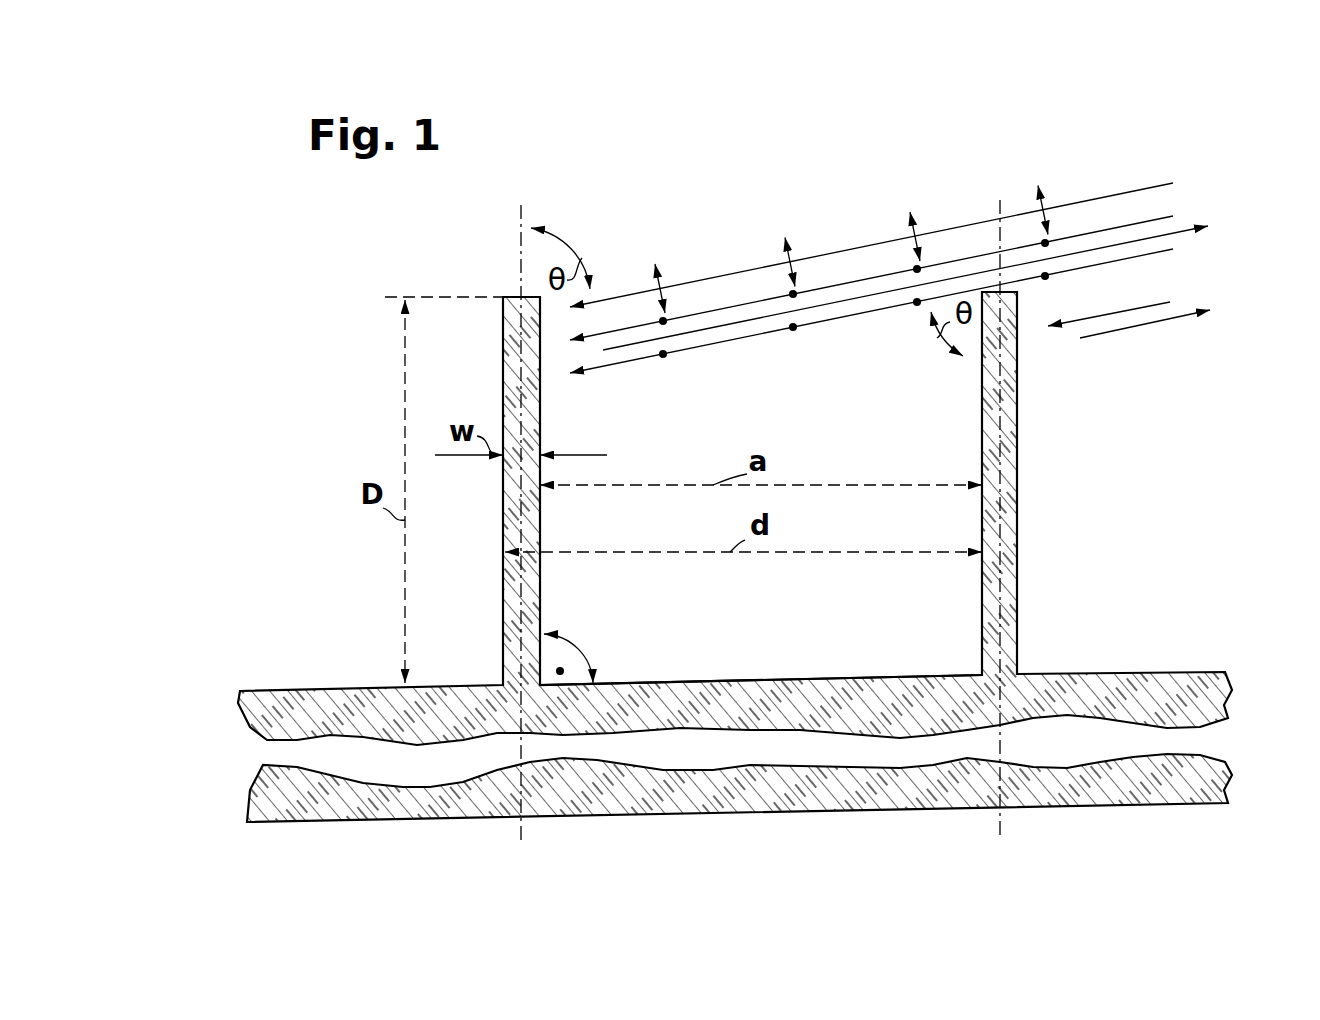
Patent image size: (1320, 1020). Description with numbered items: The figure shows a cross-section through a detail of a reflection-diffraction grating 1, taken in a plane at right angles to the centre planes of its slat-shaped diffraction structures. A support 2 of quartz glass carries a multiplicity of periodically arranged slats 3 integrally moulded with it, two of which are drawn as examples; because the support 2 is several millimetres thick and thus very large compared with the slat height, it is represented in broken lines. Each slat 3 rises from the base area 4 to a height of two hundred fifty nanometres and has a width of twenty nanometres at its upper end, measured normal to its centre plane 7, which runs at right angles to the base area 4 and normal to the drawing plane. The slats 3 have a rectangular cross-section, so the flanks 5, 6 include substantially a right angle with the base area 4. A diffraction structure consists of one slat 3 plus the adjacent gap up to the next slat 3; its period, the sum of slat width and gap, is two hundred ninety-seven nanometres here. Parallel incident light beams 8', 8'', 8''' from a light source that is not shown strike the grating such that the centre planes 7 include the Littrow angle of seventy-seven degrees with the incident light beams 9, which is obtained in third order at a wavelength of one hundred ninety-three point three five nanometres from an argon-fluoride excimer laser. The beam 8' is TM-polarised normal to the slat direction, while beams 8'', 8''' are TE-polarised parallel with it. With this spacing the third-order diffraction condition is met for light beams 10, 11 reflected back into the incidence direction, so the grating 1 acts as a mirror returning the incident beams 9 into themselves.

The reflection-diffraction grating 1 is at (326, 334).
The support 2 is at (1196, 694).
The slat 3 is at (1017, 437).
The base area 4 is at (708, 684).
The flank 5 is at (982, 583).
The flank 6 is at (1017, 582).
The centre plane 7 is at (519, 222).
The light beam 8' is at (871, 218).
The light beam 8'' is at (871, 232).
The light beam 8''' is at (880, 248).
The incident light beam 9 is at (1147, 306).
The reflected light beam 10 is at (1180, 233).
The reflected light beam 11 is at (1123, 329).